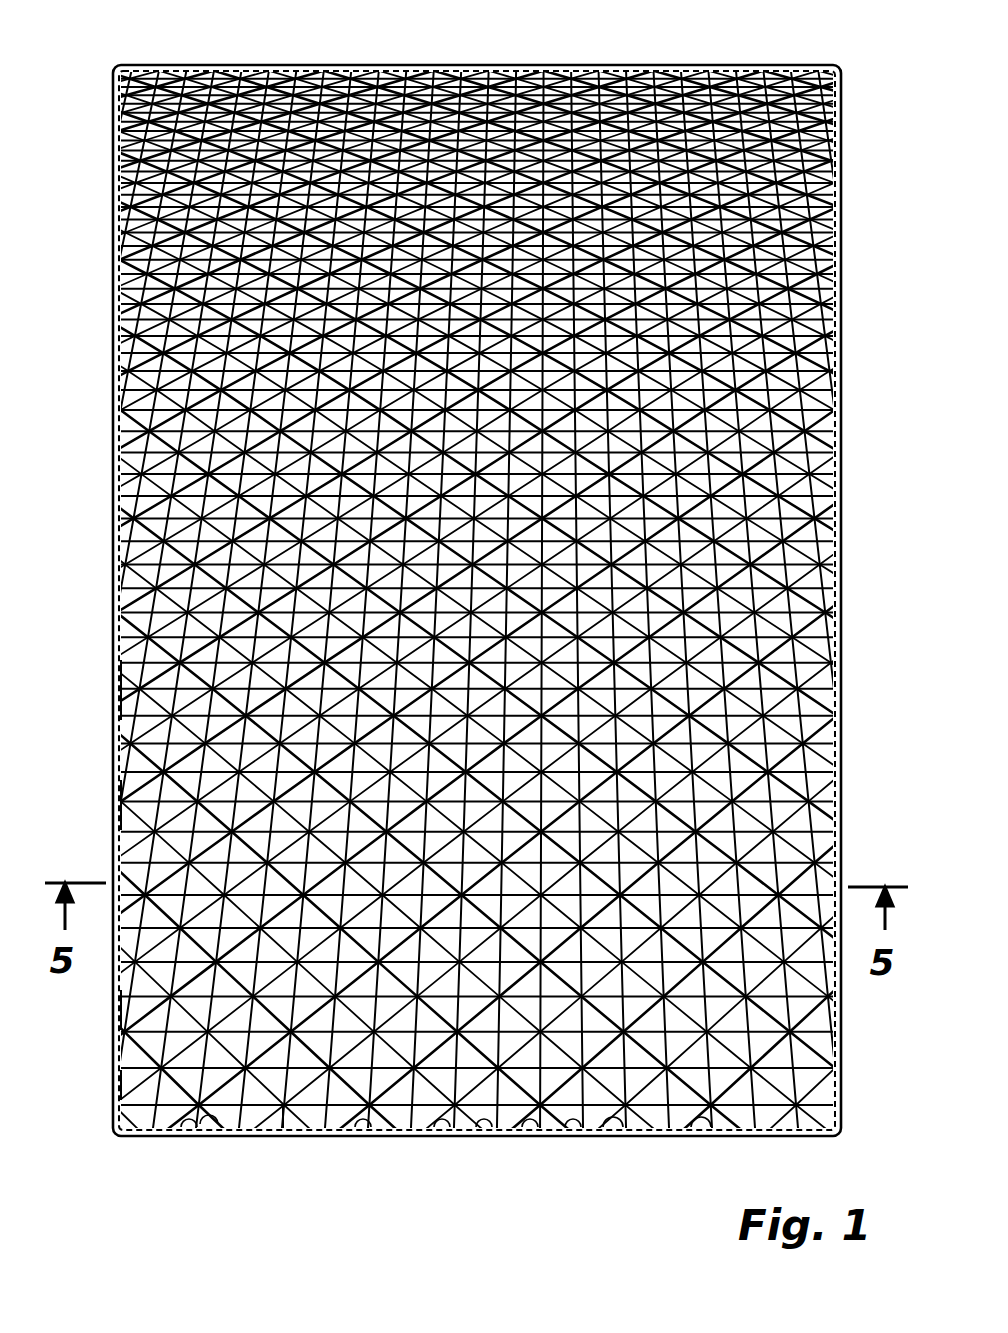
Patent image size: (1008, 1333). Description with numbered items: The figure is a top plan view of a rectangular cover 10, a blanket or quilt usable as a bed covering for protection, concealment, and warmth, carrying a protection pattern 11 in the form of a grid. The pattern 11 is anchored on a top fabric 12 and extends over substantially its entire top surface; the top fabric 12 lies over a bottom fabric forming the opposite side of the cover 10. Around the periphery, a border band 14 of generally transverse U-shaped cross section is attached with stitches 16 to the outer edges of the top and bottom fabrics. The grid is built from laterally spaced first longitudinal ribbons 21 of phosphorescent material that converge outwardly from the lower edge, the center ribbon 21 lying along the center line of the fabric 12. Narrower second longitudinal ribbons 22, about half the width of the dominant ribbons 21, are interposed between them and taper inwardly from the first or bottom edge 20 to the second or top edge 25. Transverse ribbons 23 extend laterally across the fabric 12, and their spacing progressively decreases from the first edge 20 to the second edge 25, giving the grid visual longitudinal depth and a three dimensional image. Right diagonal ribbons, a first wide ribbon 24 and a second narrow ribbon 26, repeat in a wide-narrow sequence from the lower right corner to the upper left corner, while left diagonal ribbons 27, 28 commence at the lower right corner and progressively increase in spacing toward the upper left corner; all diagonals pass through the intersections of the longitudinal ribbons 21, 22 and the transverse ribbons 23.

The cover 10 is at (851, 655).
The protection pattern 11 is at (133, 688).
The top fabric 12 is at (147, 1008).
The border band 14 is at (125, 801).
The stitches 16 is at (189, 1128).
The first edge 20 is at (262, 66).
The first longitudinal ribbons 21 is at (598, 1162).
The second longitudinal ribbons 22 is at (525, 1128).
The transverse ribbons 23 is at (127, 1083).
The first wide right diagonal ribbon 24 is at (700, 1128).
The second edge 25 is at (363, 1128).
The second narrow right diagonal ribbon 26 is at (620, 1128).
The left diagonal ribbon 27 is at (283, 1128).
The left diagonal ribbon 28 is at (226, 1128).